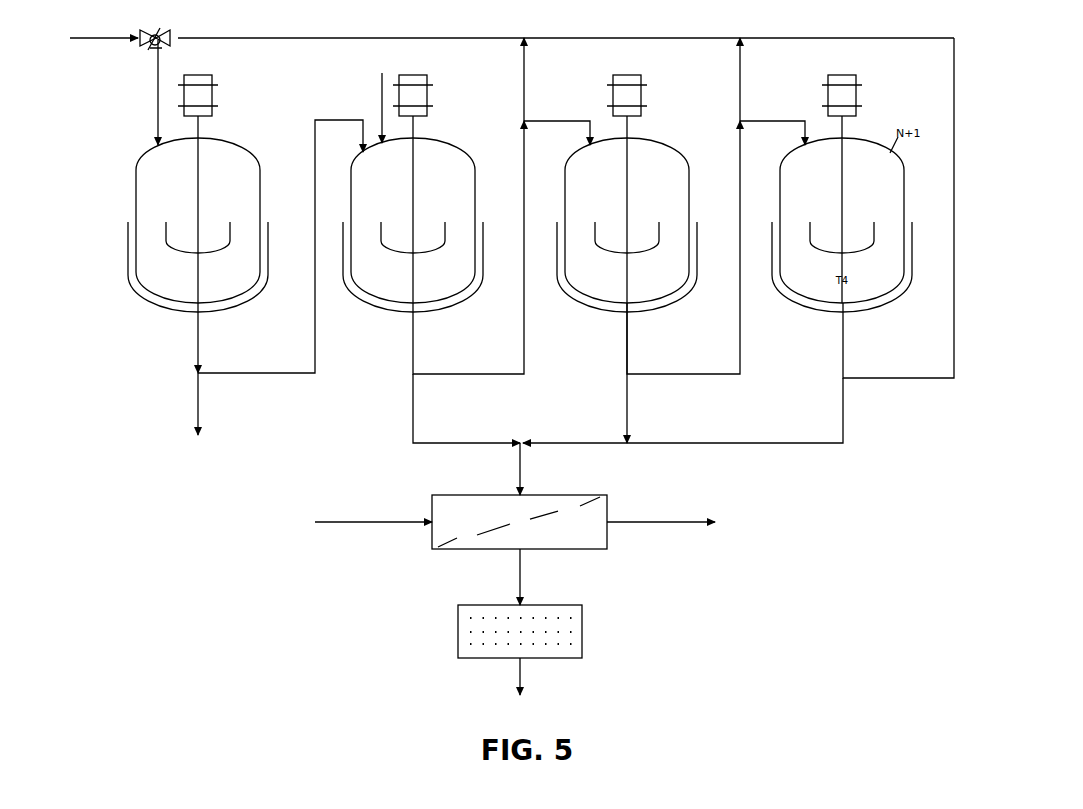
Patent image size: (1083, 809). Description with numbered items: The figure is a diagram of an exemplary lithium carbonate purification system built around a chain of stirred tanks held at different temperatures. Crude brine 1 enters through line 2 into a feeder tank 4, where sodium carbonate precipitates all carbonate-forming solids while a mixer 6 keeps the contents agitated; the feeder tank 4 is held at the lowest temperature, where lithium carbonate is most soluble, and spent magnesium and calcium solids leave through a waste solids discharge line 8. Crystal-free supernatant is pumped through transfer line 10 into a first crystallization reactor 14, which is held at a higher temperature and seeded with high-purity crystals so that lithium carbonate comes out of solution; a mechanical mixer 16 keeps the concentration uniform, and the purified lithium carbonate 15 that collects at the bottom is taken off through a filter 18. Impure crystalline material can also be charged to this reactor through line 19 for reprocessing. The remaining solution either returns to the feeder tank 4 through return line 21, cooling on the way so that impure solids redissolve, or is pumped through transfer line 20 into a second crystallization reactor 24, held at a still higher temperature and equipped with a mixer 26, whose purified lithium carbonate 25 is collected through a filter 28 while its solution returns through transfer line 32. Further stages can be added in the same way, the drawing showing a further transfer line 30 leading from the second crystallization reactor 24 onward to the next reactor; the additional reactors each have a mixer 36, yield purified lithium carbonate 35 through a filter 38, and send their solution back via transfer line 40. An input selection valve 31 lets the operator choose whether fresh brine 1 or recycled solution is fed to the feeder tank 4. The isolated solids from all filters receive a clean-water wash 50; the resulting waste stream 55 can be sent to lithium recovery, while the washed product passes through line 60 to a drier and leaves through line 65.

The crude brine 1 is at (107, 38).
The line 2 is at (156, 107).
The feeder tank 4 is at (236, 152).
The mixer 6 is at (201, 216).
The waste solids discharge line 8 is at (200, 406).
The transfer line 10 is at (316, 344).
The first crystallization reactor 14 is at (451, 152).
The purified lithium carbonate 15 is at (442, 280).
The mechanical mixer 16 is at (416, 216).
The filter 18 is at (415, 409).
The line 19 is at (378, 100).
The transfer line 20 is at (526, 343).
The return line 21 is at (526, 73).
The second crystallization reactor 24 is at (665, 152).
The purified lithium carbonate 25 is at (656, 280).
The mixer 26 is at (630, 216).
The filter 28 is at (629, 409).
The transfer line from third tank to fourth tank 30 is at (742, 343).
The input selection valve 31 is at (150, 45).
The transfer line 32 is at (742, 73).
The purified lithium carbonate 35 is at (871, 280).
The mixer 36 is at (845, 216).
The filter 38 is at (845, 409).
The transfer line 40 is at (956, 343).
The wash 50 is at (362, 524).
The waste stream 55 is at (640, 524).
The line 60 is at (522, 565).
The line 65 is at (522, 668).